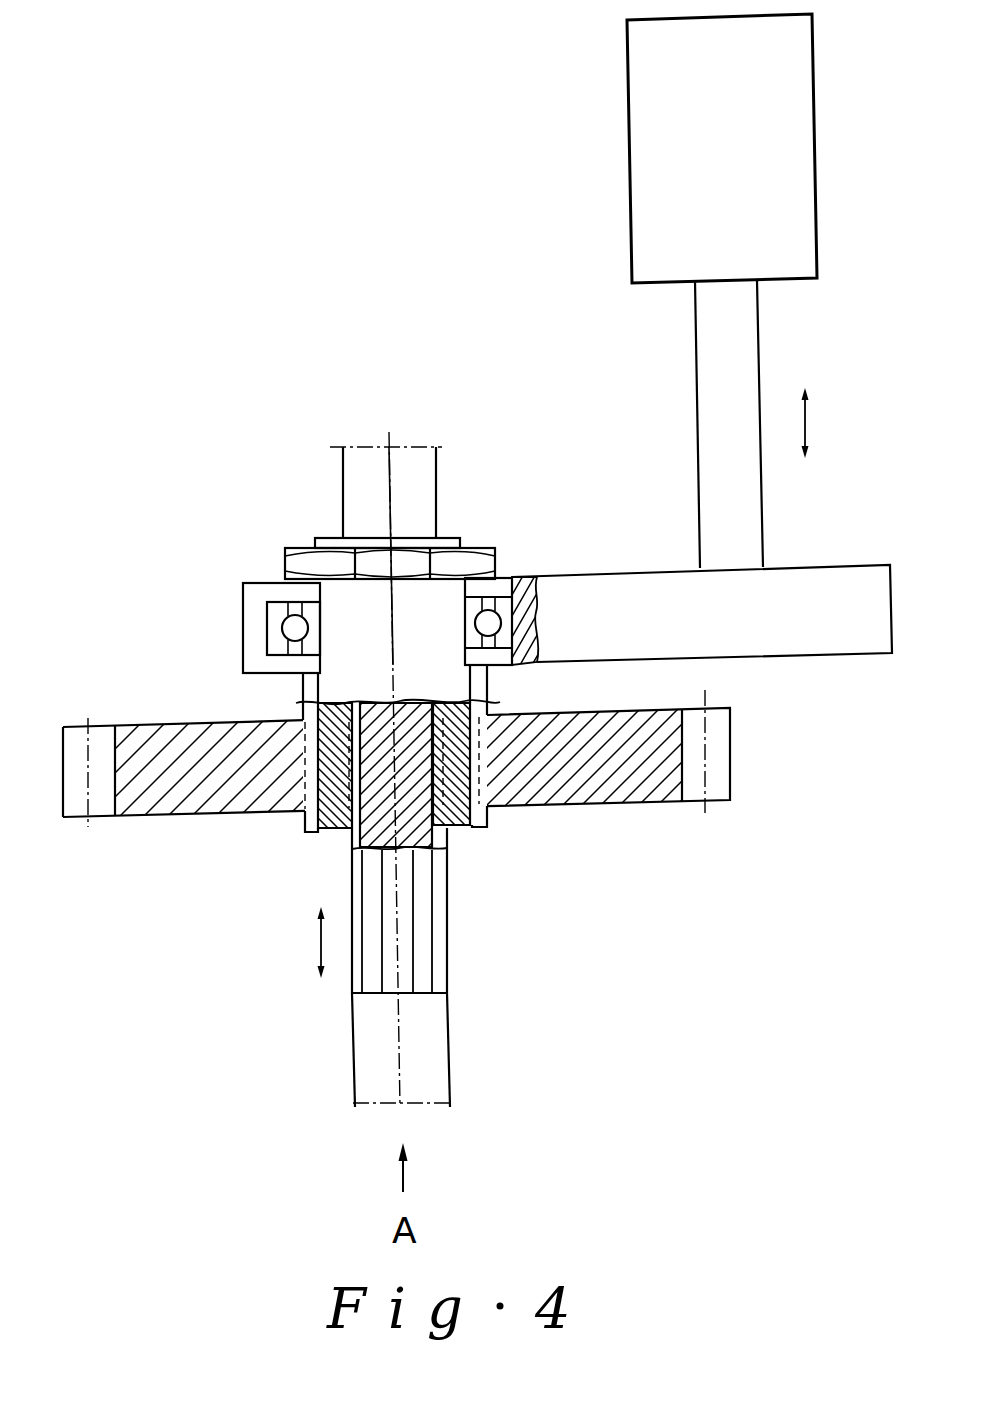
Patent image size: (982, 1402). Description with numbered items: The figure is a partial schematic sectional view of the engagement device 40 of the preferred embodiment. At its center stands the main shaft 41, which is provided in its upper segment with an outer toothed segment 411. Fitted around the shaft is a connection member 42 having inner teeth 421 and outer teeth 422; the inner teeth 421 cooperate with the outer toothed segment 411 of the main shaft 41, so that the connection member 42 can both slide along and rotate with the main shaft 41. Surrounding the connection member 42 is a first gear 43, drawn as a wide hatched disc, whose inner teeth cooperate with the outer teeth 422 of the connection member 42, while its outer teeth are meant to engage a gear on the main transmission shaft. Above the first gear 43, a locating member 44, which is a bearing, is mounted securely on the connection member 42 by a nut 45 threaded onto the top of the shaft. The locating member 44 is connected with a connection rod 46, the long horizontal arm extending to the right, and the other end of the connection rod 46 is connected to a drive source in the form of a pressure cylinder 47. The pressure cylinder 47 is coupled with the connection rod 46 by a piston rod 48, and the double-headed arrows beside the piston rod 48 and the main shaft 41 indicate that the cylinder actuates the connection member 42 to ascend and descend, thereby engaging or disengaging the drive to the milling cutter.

The engagement device 40 is at (386, 347).
The main shaft 41 is at (432, 1063).
The outer toothed segment 411 is at (425, 938).
The connection member 42 is at (111, 861).
The inner teeth 421 is at (355, 815).
The outer teeth 422 is at (303, 820).
The first gear 43 is at (658, 790).
The locating member 44 is at (273, 627).
The nut 45 is at (480, 557).
The connection rod 46 is at (852, 587).
The pressure cylinder 47 is at (798, 178).
The piston rod 48 is at (748, 352).